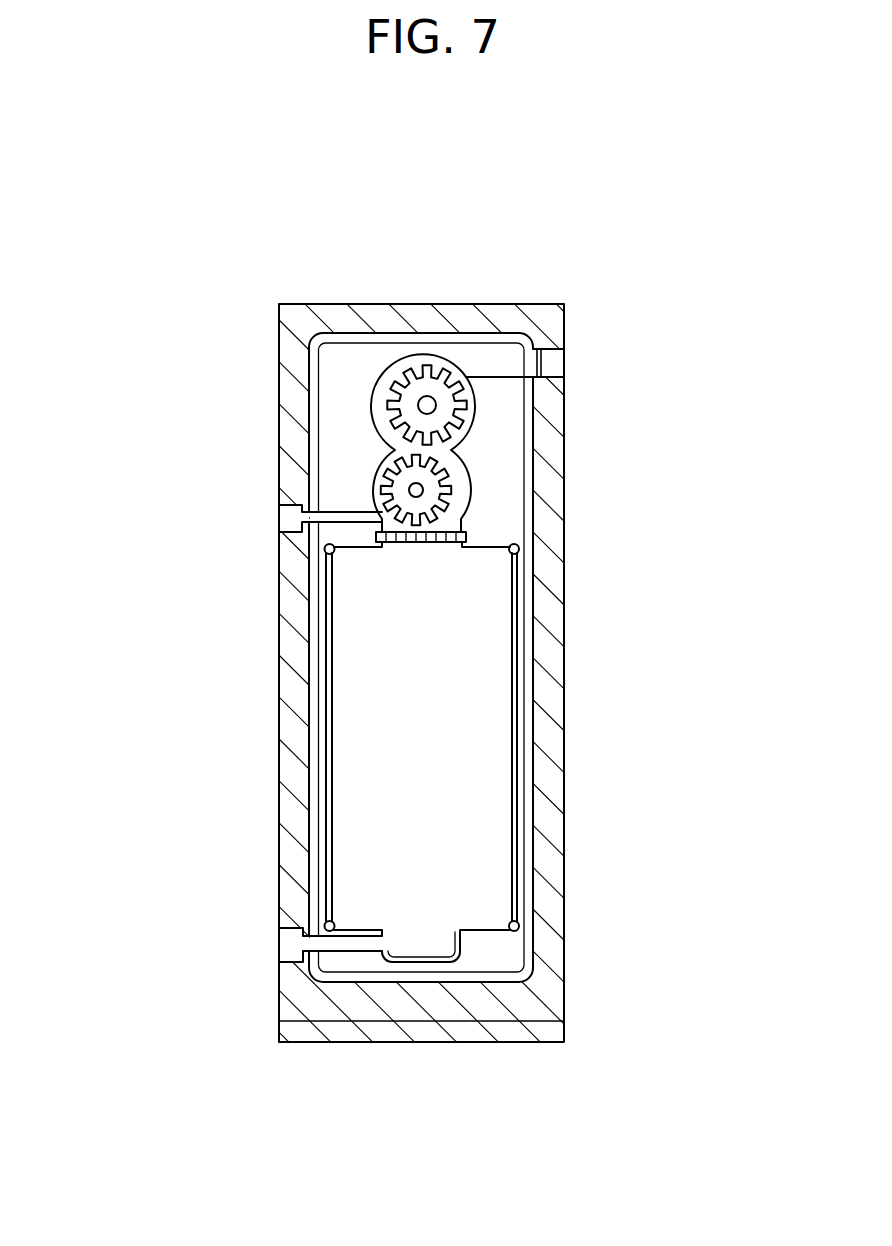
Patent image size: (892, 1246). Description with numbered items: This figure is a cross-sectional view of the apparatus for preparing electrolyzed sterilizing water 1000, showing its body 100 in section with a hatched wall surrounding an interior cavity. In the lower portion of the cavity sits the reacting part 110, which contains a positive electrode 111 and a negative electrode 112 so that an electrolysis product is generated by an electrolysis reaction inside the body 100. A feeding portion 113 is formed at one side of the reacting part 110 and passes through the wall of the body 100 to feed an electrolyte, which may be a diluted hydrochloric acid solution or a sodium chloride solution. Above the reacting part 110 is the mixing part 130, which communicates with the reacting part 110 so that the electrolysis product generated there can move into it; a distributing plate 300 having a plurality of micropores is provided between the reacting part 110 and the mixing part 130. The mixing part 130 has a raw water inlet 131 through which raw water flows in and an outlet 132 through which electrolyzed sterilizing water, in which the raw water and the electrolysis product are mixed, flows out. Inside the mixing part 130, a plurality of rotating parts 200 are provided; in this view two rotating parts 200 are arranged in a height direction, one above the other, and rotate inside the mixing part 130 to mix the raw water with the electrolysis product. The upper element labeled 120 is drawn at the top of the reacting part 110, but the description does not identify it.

The apparatus for preparing electrolyzed sterilizing water 1000 is at (206, 238).
The body 100 is at (378, 310).
The reacting part 110 is at (375, 780).
The positive electrode 111 is at (544, 737).
The negative electrode 112 is at (420, 718).
The feeding portion 113 is at (290, 947).
The cover 120 is at (419, 544).
The mixing part 130 is at (375, 407).
The raw water inlet 131 is at (288, 522).
The outlet 132 is at (552, 367).
The rotating part 200 is at (433, 395).
The distributing plate 300 is at (470, 537).